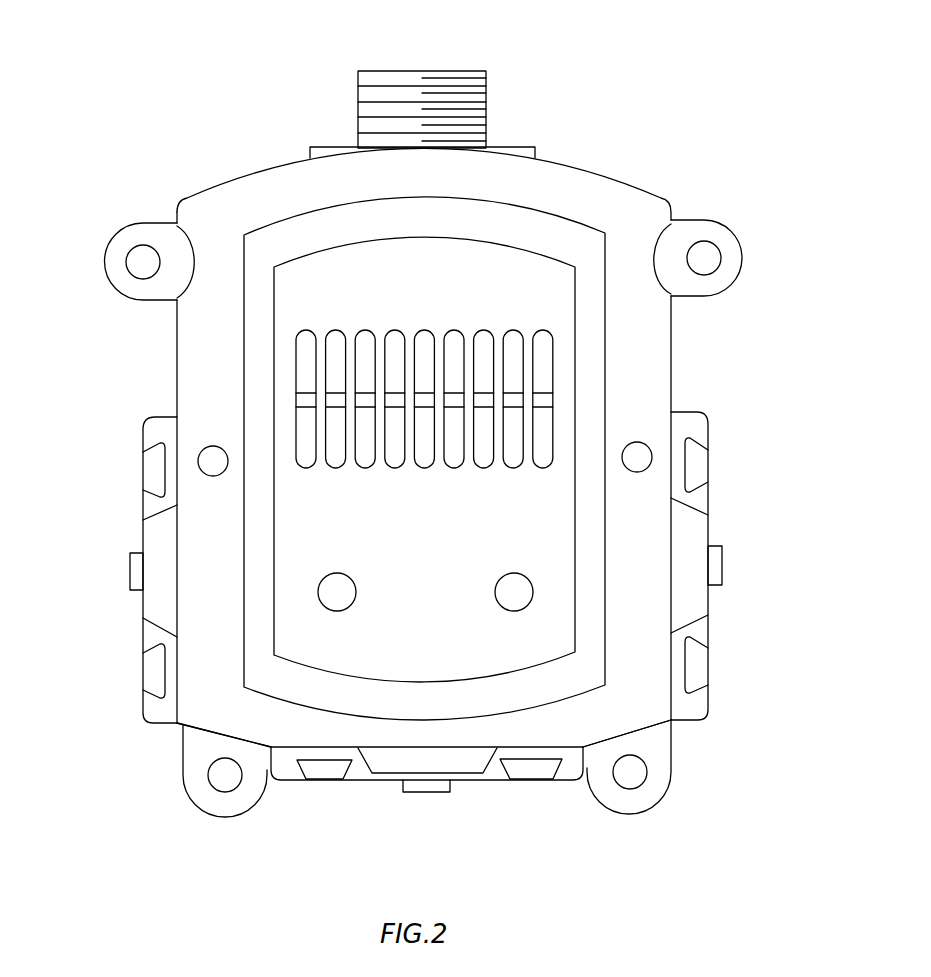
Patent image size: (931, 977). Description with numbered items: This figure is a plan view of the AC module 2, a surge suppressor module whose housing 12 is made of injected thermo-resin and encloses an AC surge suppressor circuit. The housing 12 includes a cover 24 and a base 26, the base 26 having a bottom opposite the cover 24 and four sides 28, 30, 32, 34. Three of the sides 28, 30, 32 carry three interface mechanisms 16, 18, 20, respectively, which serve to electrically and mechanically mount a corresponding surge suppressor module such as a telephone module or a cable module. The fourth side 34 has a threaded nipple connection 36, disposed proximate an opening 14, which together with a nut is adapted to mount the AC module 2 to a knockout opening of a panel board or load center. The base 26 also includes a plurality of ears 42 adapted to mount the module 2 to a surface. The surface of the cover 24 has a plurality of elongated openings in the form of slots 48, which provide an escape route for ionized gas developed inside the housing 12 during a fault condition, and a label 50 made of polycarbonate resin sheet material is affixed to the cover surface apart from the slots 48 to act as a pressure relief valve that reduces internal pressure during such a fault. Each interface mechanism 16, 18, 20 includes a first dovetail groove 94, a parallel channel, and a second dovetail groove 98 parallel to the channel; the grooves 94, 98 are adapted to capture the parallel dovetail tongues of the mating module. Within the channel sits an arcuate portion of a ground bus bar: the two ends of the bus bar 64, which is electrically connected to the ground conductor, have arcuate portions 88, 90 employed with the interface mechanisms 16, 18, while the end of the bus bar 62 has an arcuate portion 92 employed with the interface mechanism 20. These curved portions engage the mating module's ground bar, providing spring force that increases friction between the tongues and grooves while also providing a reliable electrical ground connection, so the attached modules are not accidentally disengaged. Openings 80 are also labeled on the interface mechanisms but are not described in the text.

The AC module 2 is at (538, 57).
The housing 12 is at (640, 182).
The opening 14 is at (380, 66).
The interface mechanism 16 is at (743, 583).
The interface mechanism 18 is at (106, 590).
The interface mechanism 20 is at (343, 816).
The cover 24 is at (320, 266).
The base 26 is at (655, 745).
The side 28 is at (674, 378).
The side 30 is at (177, 362).
The side 32 is at (574, 750).
The fourth side 34 is at (558, 160).
The nipple connection 36 is at (366, 92).
The ears 42 is at (125, 249).
The slots 48 is at (482, 470).
The label 50 is at (292, 644).
The bus bar 62 is at (410, 795).
The bus bar 64 is at (432, 558).
The bracket slot 80 is at (158, 612).
The arcuate portion 88 is at (720, 552).
The arcuate portion 90 is at (131, 556).
The arcuate portion 92 is at (428, 784).
The first dovetail groove 94 is at (703, 446).
The second dovetail groove 98 is at (705, 657).